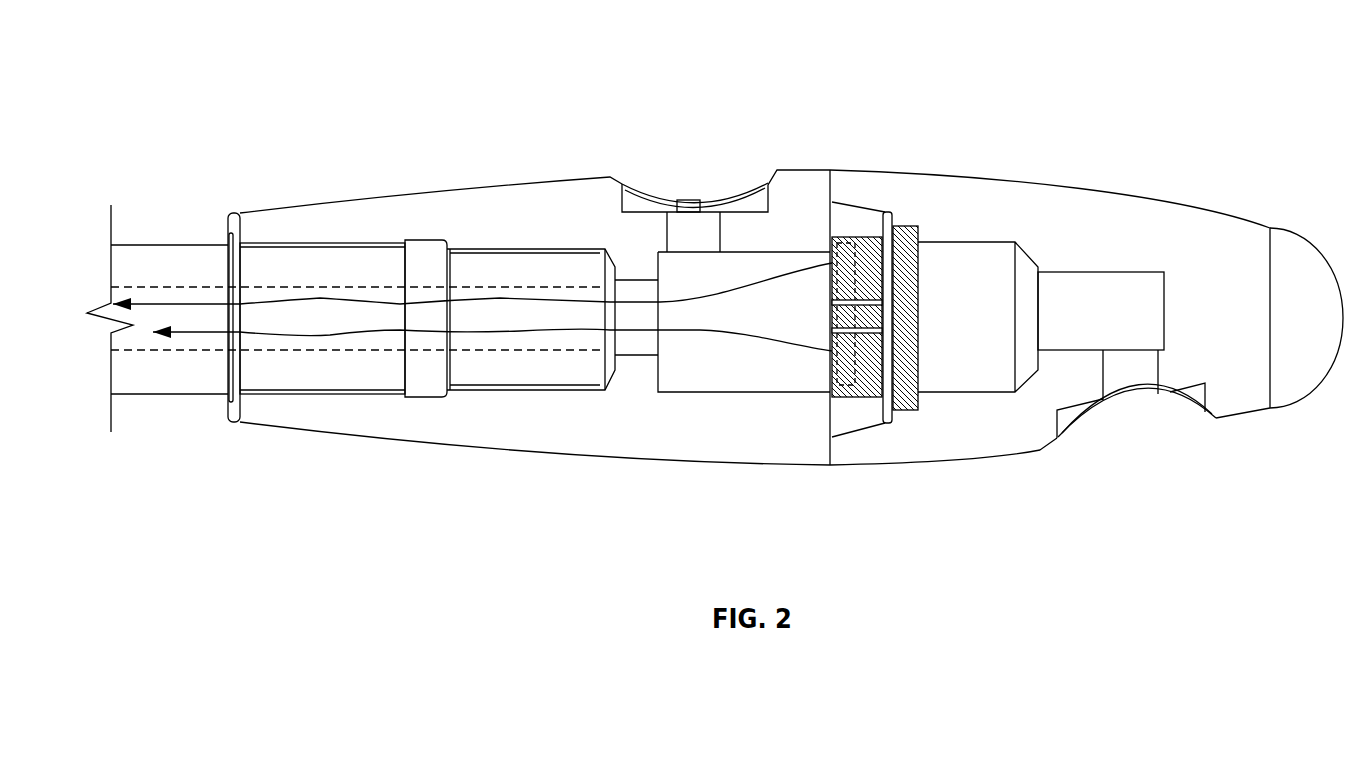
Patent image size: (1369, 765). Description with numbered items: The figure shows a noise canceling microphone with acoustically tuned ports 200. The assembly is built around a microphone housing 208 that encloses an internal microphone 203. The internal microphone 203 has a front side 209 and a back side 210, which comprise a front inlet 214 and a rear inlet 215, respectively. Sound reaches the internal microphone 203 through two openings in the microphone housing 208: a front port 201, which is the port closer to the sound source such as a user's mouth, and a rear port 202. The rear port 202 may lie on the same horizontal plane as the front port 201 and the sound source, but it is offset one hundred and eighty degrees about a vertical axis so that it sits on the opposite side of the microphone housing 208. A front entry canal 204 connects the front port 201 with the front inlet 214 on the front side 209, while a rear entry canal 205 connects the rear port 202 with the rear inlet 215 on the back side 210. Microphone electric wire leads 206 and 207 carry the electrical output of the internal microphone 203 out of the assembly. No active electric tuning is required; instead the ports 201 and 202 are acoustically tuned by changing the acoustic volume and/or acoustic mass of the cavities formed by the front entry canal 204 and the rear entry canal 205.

The noise canceling microphone with acoustically tuned ports 200 is at (160, 90).
The front port 201 is at (1138, 385).
The rear port 202 is at (707, 223).
The internal microphone 203 is at (870, 245).
The front entry canal 204 is at (1073, 288).
The rear entry canal 205 is at (697, 263).
The microphone electric wire lead 206 is at (782, 345).
The microphone electric wire lead 207 is at (722, 298).
The microphone housing 208 is at (1210, 208).
The front side 209 is at (923, 283).
The back side 210 is at (832, 293).
The front inlet 214 is at (918, 363).
The rear inlet 215 is at (832, 322).